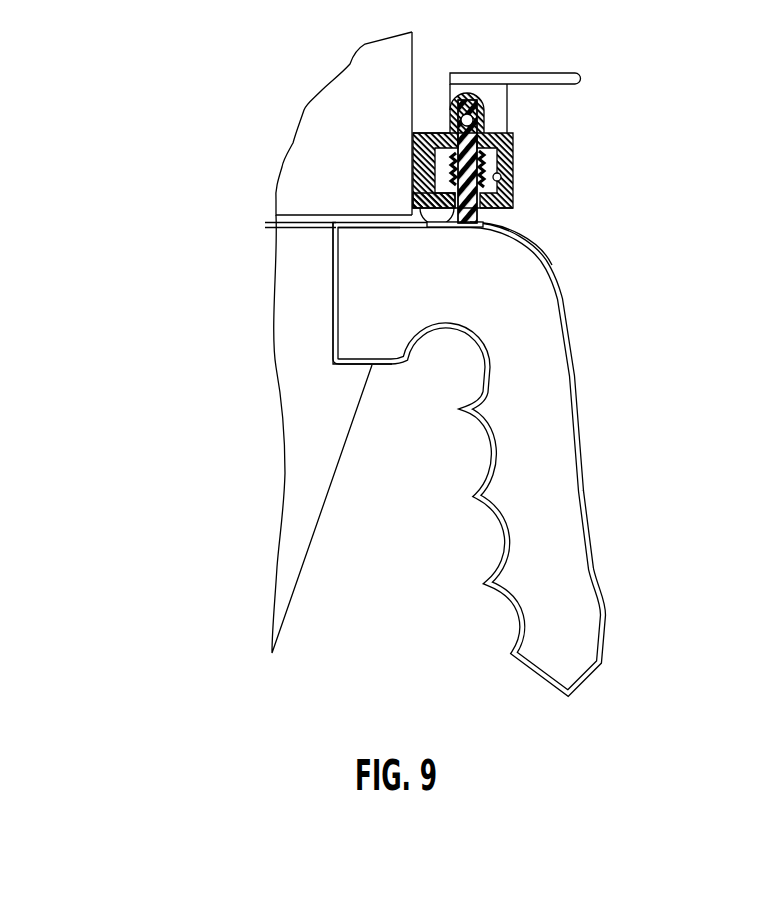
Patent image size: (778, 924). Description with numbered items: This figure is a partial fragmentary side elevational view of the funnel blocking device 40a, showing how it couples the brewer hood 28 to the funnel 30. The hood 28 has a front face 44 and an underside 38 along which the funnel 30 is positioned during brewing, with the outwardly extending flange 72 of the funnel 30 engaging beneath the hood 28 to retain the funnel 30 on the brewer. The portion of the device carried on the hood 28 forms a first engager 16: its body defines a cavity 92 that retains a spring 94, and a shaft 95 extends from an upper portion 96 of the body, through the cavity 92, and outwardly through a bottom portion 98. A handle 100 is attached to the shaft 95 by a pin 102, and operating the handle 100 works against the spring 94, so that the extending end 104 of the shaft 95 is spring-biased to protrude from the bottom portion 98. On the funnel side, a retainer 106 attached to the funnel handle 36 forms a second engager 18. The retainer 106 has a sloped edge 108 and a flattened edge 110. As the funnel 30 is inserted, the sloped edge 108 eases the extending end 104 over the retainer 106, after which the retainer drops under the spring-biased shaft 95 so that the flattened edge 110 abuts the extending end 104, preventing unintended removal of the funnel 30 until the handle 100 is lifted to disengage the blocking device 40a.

The funnel blocking device 40a is at (276, 107).
The hood 28 is at (372, 65).
The front face 44 is at (413, 55).
The first engager 16 is at (515, 157).
The cavity 92 is at (515, 173).
The spring 94 is at (512, 138).
The shaft 95 is at (471, 97).
The upper portion 96 is at (430, 132).
The bottom portion 98 is at (520, 212).
The handle 100 is at (575, 83).
The pin 102 is at (523, 74).
The extending end 104 is at (537, 242).
The retainer 106 is at (446, 230).
The sloped edge 108 is at (413, 200).
The flattened edge 110 is at (462, 230).
The second engager 18 is at (405, 239).
The underside 38 is at (378, 232).
The outwardly extending flange 72 is at (268, 226).
The funnel 30 is at (310, 520).
The handle 36 is at (607, 577).